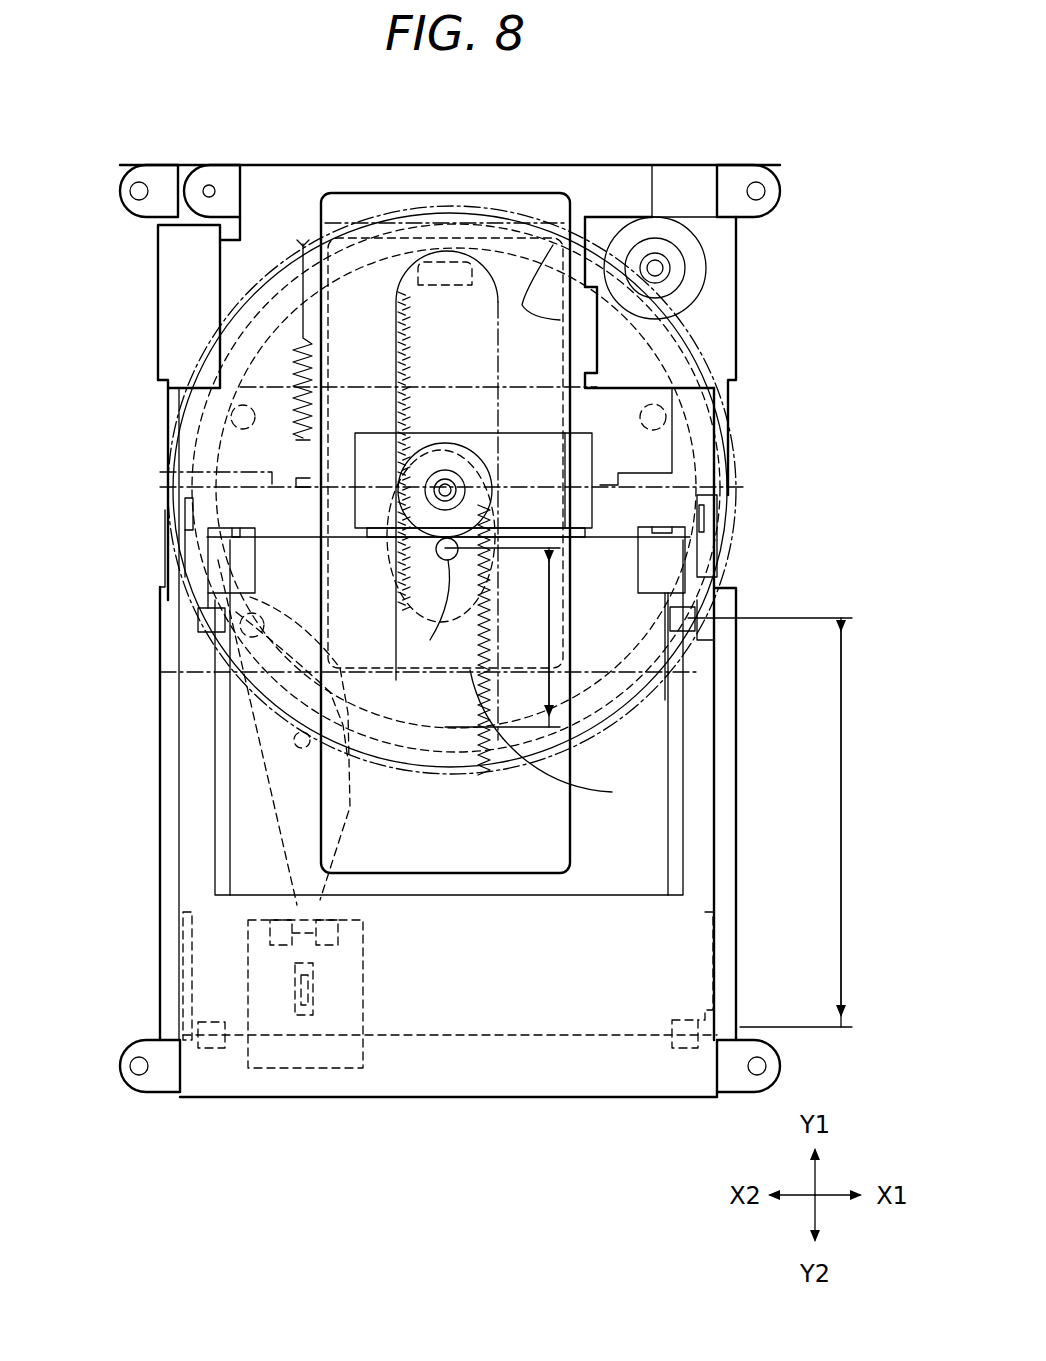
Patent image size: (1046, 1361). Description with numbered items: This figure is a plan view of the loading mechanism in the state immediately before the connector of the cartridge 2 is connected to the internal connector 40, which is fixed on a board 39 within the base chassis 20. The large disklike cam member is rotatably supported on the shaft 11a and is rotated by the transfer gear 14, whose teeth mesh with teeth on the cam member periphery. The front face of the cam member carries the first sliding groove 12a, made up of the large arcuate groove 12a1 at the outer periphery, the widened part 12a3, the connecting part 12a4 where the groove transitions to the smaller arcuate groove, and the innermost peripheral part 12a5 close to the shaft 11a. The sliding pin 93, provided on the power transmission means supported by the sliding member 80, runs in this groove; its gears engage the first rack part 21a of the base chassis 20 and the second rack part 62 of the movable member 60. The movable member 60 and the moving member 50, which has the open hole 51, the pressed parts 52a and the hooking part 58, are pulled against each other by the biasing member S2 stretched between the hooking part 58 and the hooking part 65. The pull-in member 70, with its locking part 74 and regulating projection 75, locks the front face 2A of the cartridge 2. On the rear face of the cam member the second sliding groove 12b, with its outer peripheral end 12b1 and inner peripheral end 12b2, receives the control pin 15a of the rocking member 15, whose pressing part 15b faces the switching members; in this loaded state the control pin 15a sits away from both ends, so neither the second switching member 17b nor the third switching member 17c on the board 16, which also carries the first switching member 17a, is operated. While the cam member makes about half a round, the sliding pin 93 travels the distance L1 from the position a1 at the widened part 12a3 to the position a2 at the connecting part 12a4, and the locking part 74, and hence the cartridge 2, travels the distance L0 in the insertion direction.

The cartridge 2 is at (687, 836).
The front face 2A is at (297, 537).
The shaft 11a is at (447, 480).
The first sliding groove 12a is at (640, 360).
The large arcuate groove 12a1 is at (690, 565).
The widened part 12a3 is at (552, 256).
The connecting part 12a4 is at (500, 497).
The innermost peripheral part 12a5 is at (440, 462).
The second sliding groove 12b is at (215, 430).
The outer peripheral end 12b1 is at (720, 448).
The inner peripheral end 12b2 is at (445, 265).
The transfer gear 14 is at (712, 270).
The rocking member 15 is at (278, 768).
The control pin 15a is at (192, 636).
The pressing part 15b is at (340, 912).
The board 16 is at (282, 1068).
The first switching member 17a is at (300, 1015).
The second switching member 17b is at (340, 935).
The third switching member 17c is at (270, 935).
The base chassis 20 is at (158, 262).
The first rack part 21a is at (577, 790).
The board 39 is at (262, 386).
The internal connector 40 is at (375, 433).
The moving member 50 is at (500, 235).
The open hole 51 is at (440, 602).
The pressed part 52a is at (186, 500).
The hooking part 58 is at (235, 528).
The movable member 60 is at (472, 255).
The second rack part 62 is at (408, 318).
The hooking part 65 is at (300, 243).
The pull-in member 70 is at (178, 964).
The locking part 74 is at (208, 590).
The regulating projection 75 is at (168, 1008).
The sliding member 80 is at (370, 195).
The sliding pin 93 is at (438, 550).
The position of the widened part a1 is at (468, 745).
The position of the connecting part a2 is at (437, 614).
The traveling distance of the locking part L0 is at (782, 822).
The traveling distance L1 is at (502, 637).
The biasing member S2 is at (290, 385).